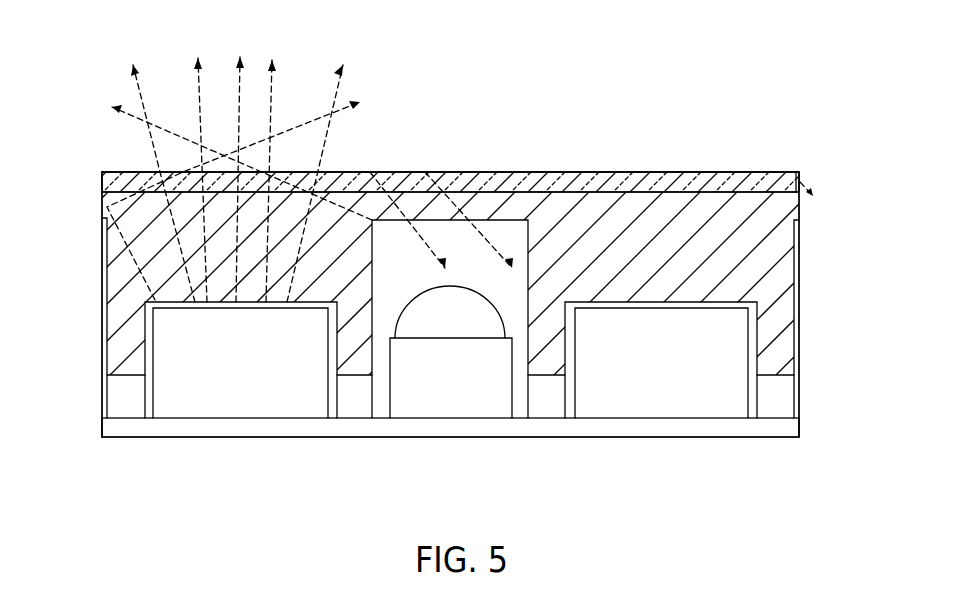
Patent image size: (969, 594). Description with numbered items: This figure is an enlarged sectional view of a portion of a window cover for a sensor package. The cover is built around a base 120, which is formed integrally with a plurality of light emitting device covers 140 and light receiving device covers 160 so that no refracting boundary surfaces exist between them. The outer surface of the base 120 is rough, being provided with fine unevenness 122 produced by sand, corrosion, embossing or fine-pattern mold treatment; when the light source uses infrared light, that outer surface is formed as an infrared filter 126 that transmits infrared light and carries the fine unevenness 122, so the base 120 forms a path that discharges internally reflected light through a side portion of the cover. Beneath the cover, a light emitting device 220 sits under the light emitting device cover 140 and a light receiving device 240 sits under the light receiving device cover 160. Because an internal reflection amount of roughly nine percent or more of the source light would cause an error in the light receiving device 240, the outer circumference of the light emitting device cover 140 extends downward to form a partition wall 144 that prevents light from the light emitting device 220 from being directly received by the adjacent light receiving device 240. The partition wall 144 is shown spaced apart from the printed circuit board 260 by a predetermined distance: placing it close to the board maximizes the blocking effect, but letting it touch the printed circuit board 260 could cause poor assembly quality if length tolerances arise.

The base 120 is at (103, 172).
The fine unevenness 122 is at (703, 172).
The infrared filter 126 is at (800, 180).
The light emitting device cover 140 is at (142, 300).
The partition wall 144 is at (122, 345).
The light receiving device cover 160 is at (428, 230).
The light emitting device 220 is at (225, 405).
The light receiving device 240 is at (450, 405).
The printed circuit board 260 is at (787, 428).